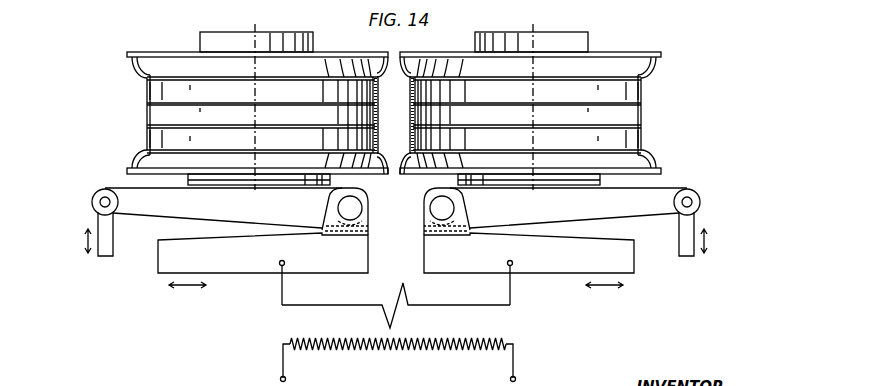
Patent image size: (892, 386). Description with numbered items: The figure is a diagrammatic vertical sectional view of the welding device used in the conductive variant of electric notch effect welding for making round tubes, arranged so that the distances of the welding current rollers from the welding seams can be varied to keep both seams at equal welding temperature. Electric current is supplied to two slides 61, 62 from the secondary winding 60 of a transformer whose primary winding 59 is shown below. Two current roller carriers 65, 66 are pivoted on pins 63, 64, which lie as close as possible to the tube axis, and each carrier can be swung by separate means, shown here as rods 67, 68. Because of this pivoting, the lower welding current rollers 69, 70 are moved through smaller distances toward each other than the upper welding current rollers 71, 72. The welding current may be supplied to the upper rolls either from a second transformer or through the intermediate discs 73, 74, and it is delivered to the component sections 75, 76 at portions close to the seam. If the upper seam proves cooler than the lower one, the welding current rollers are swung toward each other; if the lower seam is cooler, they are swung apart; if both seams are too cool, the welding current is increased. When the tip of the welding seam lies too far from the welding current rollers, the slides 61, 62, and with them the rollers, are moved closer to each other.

The primary winding 59 is at (398, 360).
The secondary winding 60 is at (396, 305).
The slide 61 is at (259, 265).
The slide 62 is at (552, 265).
The pin 63 is at (357, 208).
The pin 64 is at (432, 210).
The current roller carrier 65 is at (168, 212).
The current roller carrier 66 is at (623, 212).
The rod 67 is at (111, 252).
The rod 68 is at (680, 251).
The lower welding current roller 69 is at (137, 162).
The lower welding current roller 70 is at (648, 160).
The upper welding current roller 71 is at (135, 65).
The upper welding current roller 72 is at (653, 66).
The intermediate disc 73 is at (143, 133).
The intermediate disc 74 is at (640, 135).
The component section 75 is at (378, 106).
The component section 76 is at (411, 124).